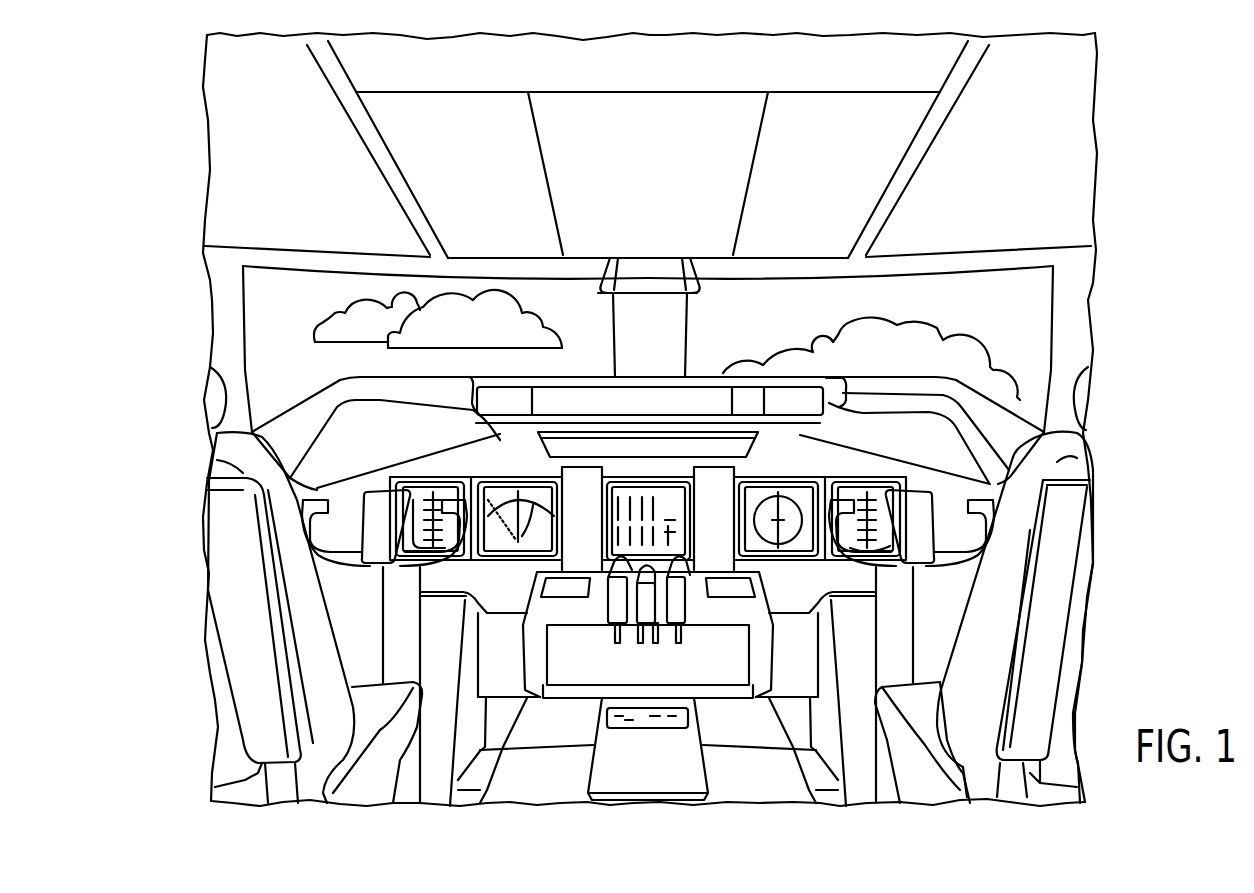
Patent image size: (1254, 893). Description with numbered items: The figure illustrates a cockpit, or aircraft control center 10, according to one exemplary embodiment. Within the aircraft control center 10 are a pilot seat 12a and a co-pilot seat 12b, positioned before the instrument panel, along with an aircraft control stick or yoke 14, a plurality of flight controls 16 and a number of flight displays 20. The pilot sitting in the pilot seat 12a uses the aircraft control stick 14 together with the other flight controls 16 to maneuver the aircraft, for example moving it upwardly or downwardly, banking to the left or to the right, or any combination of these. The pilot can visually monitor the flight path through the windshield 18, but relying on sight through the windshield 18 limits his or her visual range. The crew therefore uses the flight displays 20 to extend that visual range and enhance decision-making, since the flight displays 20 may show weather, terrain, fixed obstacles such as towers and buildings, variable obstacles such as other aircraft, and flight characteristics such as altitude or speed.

The aircraft control center 10 is at (1148, 149).
The pilot seat 12a is at (210, 525).
The co-pilot seat 12b is at (1082, 537).
The aircraft control stick or yoke 14 is at (430, 562).
The flight controls 16 is at (683, 585).
The windshield 18 is at (263, 311).
The flight displays 20 is at (427, 478).